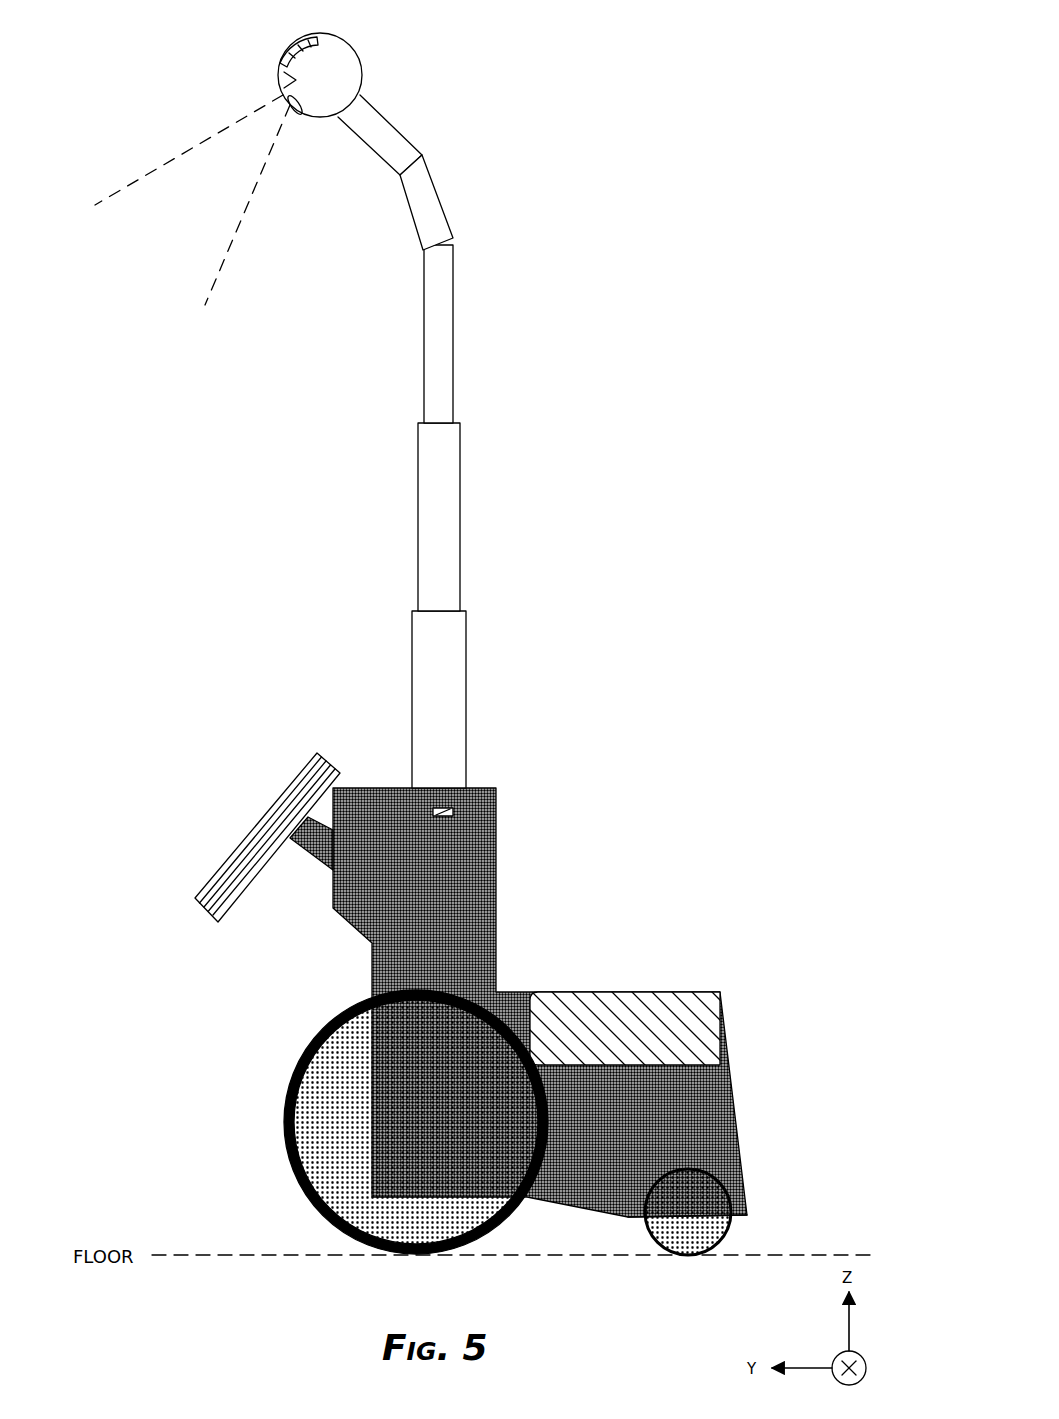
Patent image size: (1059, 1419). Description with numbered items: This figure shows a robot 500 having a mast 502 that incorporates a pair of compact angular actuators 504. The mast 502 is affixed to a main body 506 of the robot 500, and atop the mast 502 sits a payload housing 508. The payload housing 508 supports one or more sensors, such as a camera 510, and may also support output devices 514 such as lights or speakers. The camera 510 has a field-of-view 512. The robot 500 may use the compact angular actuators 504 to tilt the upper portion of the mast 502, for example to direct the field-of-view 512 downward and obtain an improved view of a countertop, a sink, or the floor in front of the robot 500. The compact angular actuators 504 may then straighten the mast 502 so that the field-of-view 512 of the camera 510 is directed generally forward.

The robot 500 is at (707, 58).
The mast 502 is at (418, 557).
The compact angular actuators 504 is at (455, 234).
The main body 506 is at (458, 903).
The payload housing 508 is at (320, 76).
The camera 510 is at (303, 97).
The field-of-view 512 is at (179, 200).
The output devices 514 is at (283, 70).